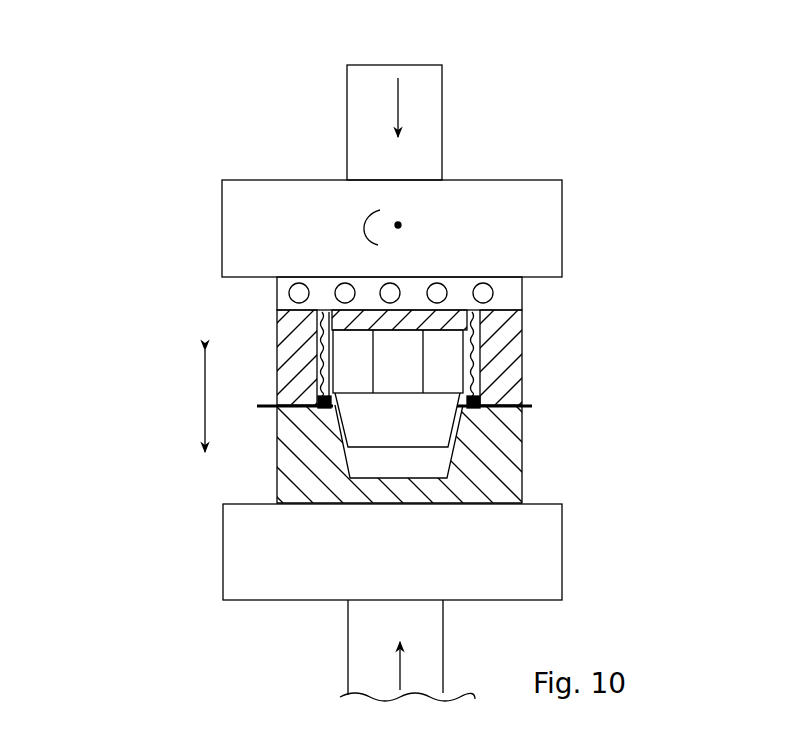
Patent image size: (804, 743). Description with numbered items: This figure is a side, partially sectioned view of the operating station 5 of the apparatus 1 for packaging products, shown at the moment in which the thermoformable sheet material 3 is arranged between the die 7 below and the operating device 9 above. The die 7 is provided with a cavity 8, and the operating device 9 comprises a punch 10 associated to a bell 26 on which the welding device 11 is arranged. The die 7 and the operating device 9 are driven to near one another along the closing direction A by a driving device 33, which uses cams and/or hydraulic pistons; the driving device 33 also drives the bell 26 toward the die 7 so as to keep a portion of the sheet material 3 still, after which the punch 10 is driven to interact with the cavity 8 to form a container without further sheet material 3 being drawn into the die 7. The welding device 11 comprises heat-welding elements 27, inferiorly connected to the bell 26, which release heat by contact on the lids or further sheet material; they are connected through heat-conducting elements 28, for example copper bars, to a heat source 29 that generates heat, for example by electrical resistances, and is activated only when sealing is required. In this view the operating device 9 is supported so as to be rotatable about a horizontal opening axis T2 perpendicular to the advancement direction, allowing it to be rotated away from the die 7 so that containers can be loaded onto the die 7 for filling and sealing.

The apparatus 1 is at (72, 235).
The thermoformable sheet material 3 is at (532, 410).
The operating station 5 is at (662, 372).
The die 7 is at (297, 475).
The cavity 8 is at (445, 472).
The operating device 9 is at (602, 282).
The punch 10 is at (362, 416).
The welding device 11 is at (491, 299).
The bell 26 is at (508, 365).
The heat-welding elements 27 is at (318, 386).
The heat-conducting elements 28 is at (316, 338).
The heat source 29 is at (503, 301).
The driving device 33 is at (312, 130).
The horizontal opening axis T2 is at (398, 225).
The closing direction A is at (189, 401).